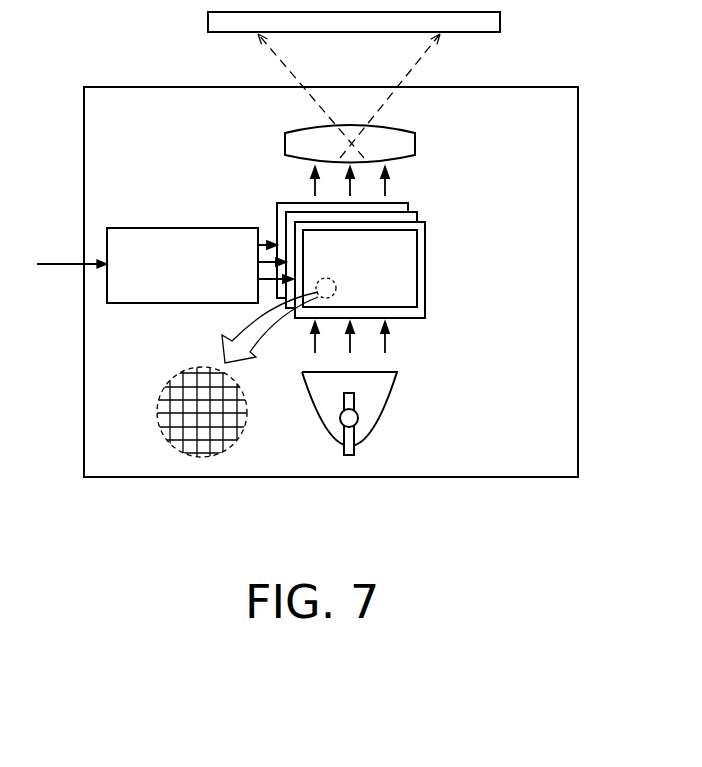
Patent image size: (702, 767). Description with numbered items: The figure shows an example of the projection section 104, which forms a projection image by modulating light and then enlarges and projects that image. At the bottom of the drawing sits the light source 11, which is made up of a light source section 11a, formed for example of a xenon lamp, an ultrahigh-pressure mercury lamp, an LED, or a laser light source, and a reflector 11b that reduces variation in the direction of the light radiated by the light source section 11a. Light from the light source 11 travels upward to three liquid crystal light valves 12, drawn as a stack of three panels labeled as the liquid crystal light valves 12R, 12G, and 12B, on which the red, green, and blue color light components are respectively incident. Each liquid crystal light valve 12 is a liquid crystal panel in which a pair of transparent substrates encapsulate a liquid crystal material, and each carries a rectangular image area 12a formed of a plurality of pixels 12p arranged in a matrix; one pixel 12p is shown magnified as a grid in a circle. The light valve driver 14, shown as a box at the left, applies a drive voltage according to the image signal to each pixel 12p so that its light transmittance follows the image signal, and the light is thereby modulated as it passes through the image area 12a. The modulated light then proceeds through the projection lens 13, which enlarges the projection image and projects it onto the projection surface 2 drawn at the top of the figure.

The projection section 104 is at (120, 87).
The projection surface 2 is at (480, 32).
The projection lens 13 is at (405, 144).
The liquid crystal light valves 12 is at (420, 251).
The liquid crystal light valve for blue 12B is at (408, 207).
The liquid crystal light valve for green 12G is at (415, 218).
The liquid crystal light valve for red 12R is at (420, 253).
The image area 12a is at (403, 287).
The pixel 12p is at (190, 371).
The light valve driver 14 is at (210, 228).
The light source 11 is at (364, 416).
The light source section 11a is at (358, 418).
The reflector 11b is at (315, 427).